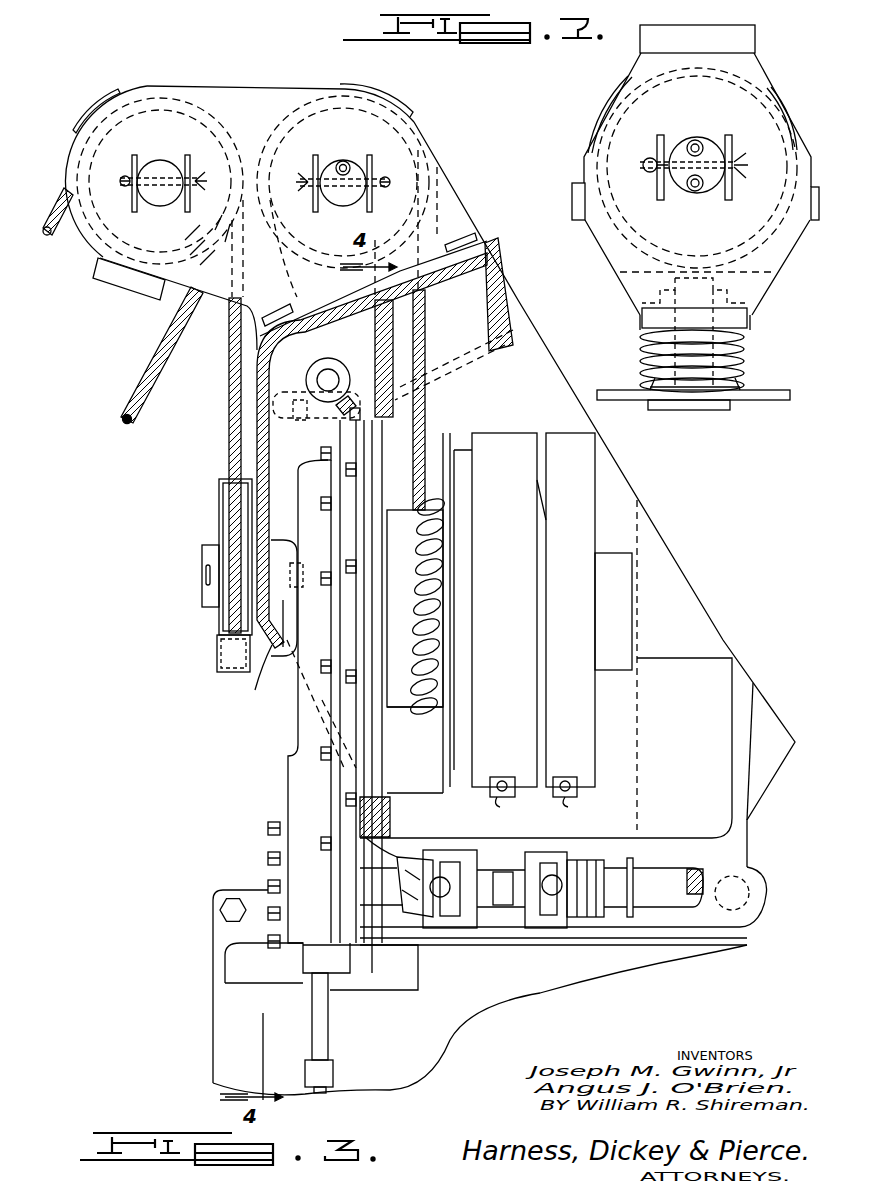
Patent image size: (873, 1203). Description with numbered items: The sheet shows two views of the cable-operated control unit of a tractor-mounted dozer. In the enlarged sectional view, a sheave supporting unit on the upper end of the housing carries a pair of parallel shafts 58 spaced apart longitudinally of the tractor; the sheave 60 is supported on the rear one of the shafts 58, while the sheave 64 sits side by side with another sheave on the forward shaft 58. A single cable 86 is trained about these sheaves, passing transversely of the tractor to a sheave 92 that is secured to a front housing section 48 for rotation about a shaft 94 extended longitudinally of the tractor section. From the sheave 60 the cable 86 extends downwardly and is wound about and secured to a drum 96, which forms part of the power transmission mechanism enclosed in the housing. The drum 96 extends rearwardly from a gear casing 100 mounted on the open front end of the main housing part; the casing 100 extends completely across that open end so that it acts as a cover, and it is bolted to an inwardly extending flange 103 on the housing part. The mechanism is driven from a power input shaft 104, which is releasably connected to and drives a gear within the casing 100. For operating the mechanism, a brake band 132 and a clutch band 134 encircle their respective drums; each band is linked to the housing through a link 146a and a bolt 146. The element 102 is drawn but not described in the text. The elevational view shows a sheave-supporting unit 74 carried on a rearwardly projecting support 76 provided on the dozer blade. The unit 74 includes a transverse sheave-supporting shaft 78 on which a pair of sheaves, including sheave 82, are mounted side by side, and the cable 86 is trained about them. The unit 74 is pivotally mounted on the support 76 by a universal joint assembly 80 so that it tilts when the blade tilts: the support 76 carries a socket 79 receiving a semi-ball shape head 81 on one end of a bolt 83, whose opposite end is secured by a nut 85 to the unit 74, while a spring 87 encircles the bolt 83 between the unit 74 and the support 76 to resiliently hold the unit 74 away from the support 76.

In FIG. 3, the front housing section 48 is at (256, 432).
In FIG. 3, the parallel shafts 58 is at (163, 157).
In FIG. 3, the sheave 60 is at (402, 145).
In FIG. 3, the sheave 64 is at (127, 123).
In FIG. 3, the cable 86 is at (162, 370).
In FIG. 3, the sheave 92 is at (218, 493).
In FIG. 3, the shaft 94 is at (203, 600).
In FIG. 3, the drum 96 is at (398, 705).
In FIG. 3, the gear casing 100 is at (296, 782).
In FIG. 3, the curved arm 102 is at (286, 652).
In FIG. 3, the inwardly extending flange 103 is at (387, 342).
In FIG. 3, the power input shaft 104 is at (578, 862).
In FIG. 3, the brake band 132 is at (488, 435).
In FIG. 3, the clutch band 134 is at (577, 420).
In FIG. 3, the bolt 146 is at (563, 779).
In FIG. 3, the link 146a is at (502, 800).
In FIG. 7, the sheave-supporting unit 74 is at (620, 147).
In FIG. 7, the rearwardly projecting support 76 is at (775, 402).
In FIG. 7, the transverse sheave-supporting shaft 78 is at (710, 147).
In FIG. 7, the socket 79 is at (745, 385).
In FIG. 7, the universal joint assembly 80 is at (640, 308).
In FIG. 7, the semi-ball shape head 81 is at (660, 410).
In FIG. 7, the sheave 82 is at (612, 103).
In FIG. 7, the bolt 83 is at (750, 311).
In FIG. 7, the nut 85 is at (740, 282).
In FIG. 7, the spring 87 is at (640, 340).